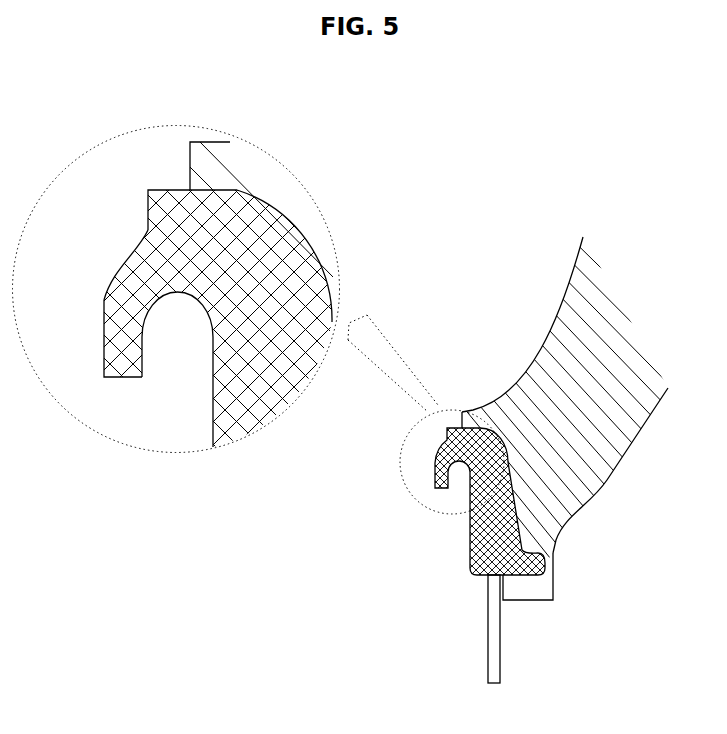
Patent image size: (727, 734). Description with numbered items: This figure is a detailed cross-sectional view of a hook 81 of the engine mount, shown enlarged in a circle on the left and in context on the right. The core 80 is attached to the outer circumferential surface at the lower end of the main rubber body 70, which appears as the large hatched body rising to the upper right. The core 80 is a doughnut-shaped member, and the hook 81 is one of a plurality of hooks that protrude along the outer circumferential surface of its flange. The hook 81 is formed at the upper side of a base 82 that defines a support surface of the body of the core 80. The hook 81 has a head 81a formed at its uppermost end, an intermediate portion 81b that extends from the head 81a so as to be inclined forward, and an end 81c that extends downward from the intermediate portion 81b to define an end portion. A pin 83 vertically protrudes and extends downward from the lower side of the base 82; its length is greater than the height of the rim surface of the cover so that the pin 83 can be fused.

The main rubber body 70 is at (573, 440).
The core 80 is at (468, 543).
The hook 81 is at (446, 462).
The head 81a is at (165, 203).
The intermediate portion 81b is at (132, 282).
The end 81c is at (120, 370).
The base 82 is at (527, 572).
The pin 83 is at (490, 635).